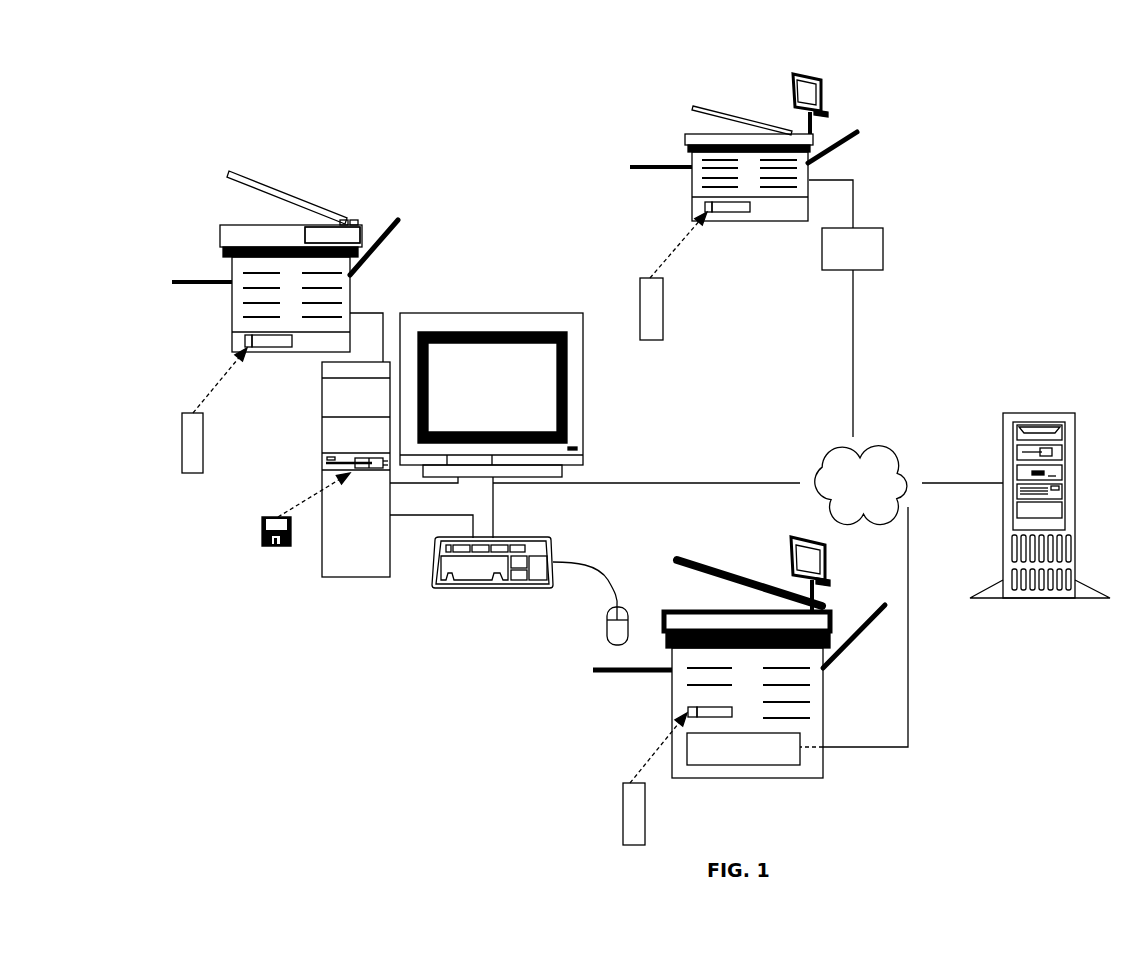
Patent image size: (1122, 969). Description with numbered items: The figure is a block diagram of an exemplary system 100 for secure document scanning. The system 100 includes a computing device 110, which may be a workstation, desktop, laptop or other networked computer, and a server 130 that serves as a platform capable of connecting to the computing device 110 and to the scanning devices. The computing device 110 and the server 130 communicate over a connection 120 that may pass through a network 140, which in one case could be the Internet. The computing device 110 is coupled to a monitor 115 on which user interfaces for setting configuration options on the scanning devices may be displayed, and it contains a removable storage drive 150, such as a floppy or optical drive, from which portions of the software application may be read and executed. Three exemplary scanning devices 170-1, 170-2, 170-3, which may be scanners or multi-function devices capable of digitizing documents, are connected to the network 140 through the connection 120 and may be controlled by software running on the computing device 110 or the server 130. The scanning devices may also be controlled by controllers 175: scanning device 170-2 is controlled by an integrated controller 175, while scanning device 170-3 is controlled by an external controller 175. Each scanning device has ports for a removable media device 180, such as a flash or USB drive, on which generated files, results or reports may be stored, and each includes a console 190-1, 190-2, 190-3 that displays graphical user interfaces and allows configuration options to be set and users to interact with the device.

The system 100 is at (364, 168).
The computing device 110 is at (397, 459).
The monitor 115 is at (491, 408).
The connection 120 is at (646, 494).
The server 130 is at (1040, 485).
The network 140 is at (878, 495).
The removable storage drive 150 is at (306, 523).
The scanning device 170-1 is at (272, 269).
The scanning device 170-2 is at (726, 669).
The scanning device 170-3 is at (743, 178).
The controller 175 is at (785, 496).
The removable media device 180 is at (427, 533).
The console 190-1 is at (357, 218).
The console 190-2 is at (838, 573).
The console 190-3 is at (835, 104).